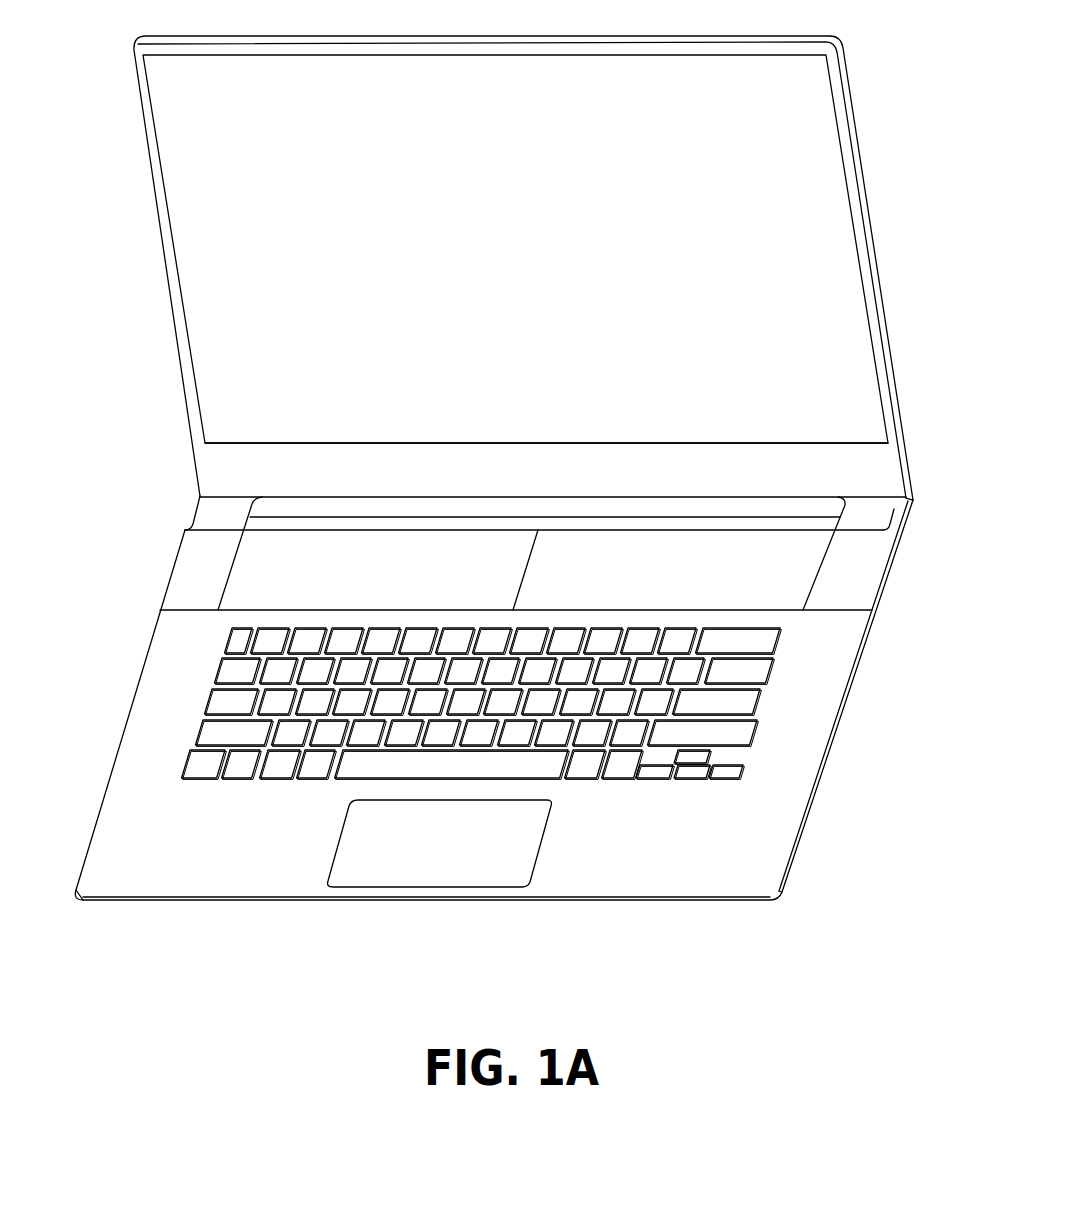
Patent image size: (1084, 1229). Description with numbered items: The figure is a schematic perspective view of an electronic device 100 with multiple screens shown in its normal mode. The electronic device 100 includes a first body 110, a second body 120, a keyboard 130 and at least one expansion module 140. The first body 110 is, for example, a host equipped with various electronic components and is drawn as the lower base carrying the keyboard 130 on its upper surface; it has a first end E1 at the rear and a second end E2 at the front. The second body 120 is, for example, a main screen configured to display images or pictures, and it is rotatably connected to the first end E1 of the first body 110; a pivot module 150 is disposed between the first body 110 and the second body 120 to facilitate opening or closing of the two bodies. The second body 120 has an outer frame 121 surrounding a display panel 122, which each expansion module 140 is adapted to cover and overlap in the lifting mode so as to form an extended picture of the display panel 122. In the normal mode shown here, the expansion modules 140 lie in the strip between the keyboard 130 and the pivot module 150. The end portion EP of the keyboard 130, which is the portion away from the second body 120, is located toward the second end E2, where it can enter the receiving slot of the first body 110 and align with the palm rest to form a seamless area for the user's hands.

The electronic device 100 is at (502, 519).
The first body 110 is at (843, 705).
The second body 120 is at (479, 268).
The outer frame 121 is at (220, 470).
The display panel 122 is at (253, 297).
The keyboard 130 is at (270, 877).
The expansion module 140 is at (573, 580).
The pivot module 150 is at (752, 505).
The first end E1 is at (903, 509).
The second end E2 is at (772, 902).
The end portion EP is at (141, 875).